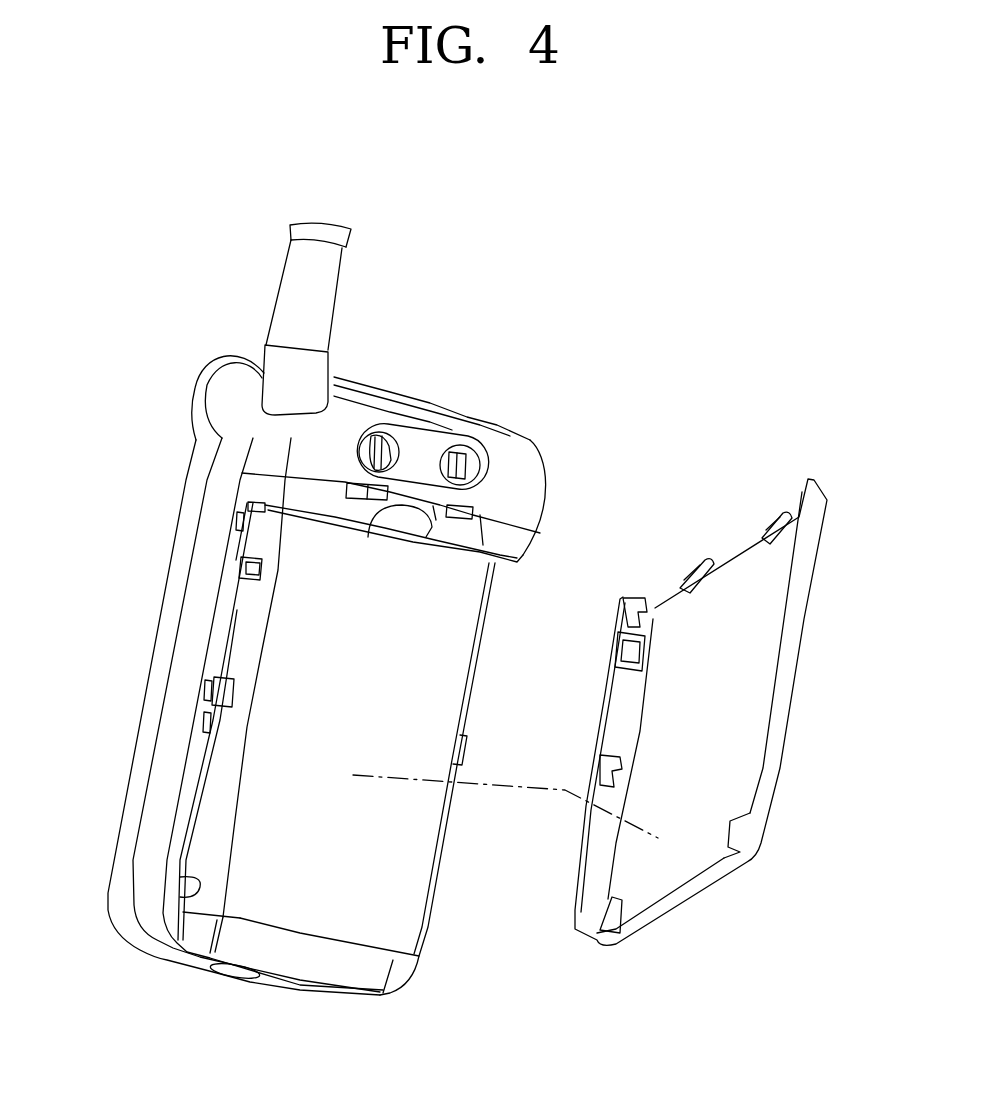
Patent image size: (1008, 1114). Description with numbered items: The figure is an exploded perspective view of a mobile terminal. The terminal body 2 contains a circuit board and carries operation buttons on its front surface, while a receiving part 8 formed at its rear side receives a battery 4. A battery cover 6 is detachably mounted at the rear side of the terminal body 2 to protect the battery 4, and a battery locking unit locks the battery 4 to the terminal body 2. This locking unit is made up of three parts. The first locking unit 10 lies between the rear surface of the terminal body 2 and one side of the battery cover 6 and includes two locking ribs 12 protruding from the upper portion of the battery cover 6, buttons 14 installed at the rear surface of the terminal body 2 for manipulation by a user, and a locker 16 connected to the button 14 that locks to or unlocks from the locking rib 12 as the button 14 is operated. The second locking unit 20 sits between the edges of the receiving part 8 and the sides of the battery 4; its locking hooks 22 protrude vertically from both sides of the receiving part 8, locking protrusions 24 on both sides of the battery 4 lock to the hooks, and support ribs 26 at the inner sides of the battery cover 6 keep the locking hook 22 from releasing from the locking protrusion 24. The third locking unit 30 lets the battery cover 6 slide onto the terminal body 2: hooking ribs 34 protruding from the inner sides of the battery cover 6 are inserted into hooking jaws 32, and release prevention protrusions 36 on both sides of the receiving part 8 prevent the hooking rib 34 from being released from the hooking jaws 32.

The terminal body 2 is at (327, 609).
The battery 4 is at (437, 909).
The battery cover 6 is at (813, 671).
The receiving part 8 is at (185, 903).
The first locking unit 10 is at (447, 440).
The locking ribs 12 is at (769, 515).
The buttons 14 is at (437, 440).
The locker 16 is at (358, 484).
The second locking unit 20 is at (153, 721).
The locking hooks 22 is at (240, 566).
The locking protrusions 24 is at (240, 580).
The support ribs 26 is at (635, 646).
The third locking unit 30 is at (202, 694).
The hooking jaws 32 is at (213, 682).
The hooking ribs 34 is at (622, 602).
The release prevention protrusions 36 is at (238, 519).